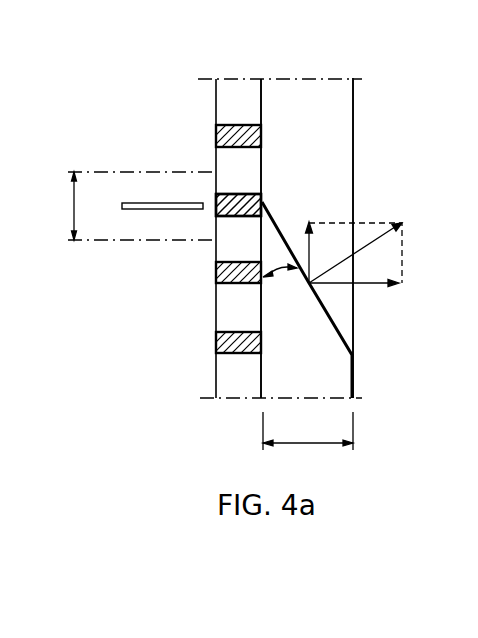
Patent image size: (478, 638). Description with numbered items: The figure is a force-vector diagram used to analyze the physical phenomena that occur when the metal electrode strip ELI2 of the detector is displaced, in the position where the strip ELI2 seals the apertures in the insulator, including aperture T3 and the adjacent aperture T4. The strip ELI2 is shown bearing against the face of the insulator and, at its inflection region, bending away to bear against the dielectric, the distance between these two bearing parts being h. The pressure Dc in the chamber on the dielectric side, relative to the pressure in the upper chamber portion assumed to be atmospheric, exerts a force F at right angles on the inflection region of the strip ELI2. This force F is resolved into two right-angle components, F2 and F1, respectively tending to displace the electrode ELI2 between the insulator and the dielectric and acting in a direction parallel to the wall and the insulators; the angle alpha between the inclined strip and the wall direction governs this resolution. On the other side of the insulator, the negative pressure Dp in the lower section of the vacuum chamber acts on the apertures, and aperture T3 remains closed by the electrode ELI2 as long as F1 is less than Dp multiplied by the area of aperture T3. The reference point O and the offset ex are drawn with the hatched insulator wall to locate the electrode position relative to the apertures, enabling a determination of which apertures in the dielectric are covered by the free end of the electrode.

The negative pressure in lower section of vacuum chamber Dp is at (209, 238).
The pressure in chamber CHDEP Dc is at (307, 238).
The aperture T3 is at (238, 170).
The fourth tooth segment T4 is at (238, 238).
The origin / reference point O is at (210, 328).
The eccentricity offset ex is at (120, 206).
The metal electrode strip ELI2 is at (335, 327).
The force F is at (358, 238).
The force component F1 is at (366, 299).
The force component F2 is at (315, 239).
The inclination angle alpha is at (280, 264).
The distance h is at (308, 431).